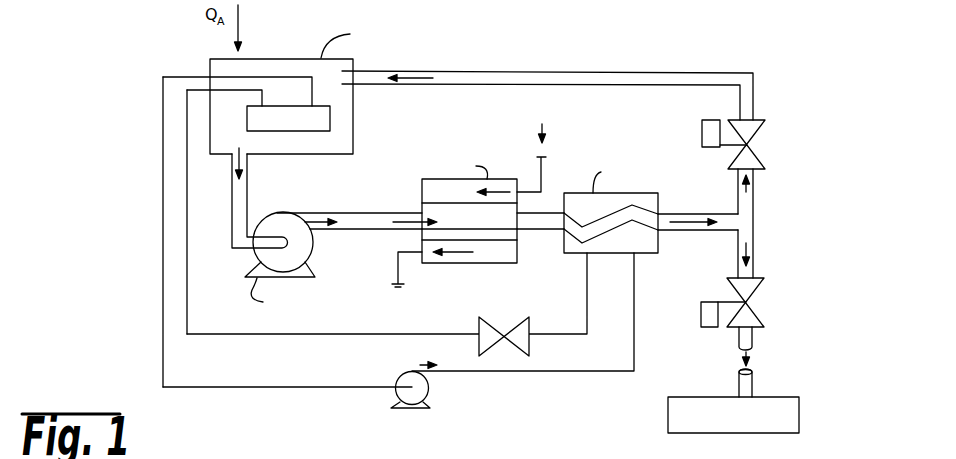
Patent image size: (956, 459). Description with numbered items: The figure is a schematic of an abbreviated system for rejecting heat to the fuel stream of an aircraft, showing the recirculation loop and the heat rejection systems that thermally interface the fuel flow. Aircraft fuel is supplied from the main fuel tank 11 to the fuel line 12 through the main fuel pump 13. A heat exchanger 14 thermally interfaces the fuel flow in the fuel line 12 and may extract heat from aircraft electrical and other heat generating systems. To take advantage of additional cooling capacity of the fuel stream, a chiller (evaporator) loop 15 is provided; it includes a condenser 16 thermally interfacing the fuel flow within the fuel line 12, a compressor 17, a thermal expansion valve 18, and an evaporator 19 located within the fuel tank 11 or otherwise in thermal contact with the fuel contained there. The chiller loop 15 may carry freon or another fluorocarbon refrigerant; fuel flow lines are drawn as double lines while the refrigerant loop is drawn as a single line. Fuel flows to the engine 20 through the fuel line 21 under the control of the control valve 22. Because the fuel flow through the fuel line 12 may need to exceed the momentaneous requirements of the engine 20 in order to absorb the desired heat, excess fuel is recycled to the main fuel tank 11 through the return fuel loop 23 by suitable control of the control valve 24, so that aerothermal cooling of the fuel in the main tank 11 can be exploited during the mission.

The main fuel tank 11 is at (285, 58).
The fuel line 12 is at (317, 213).
The main fuel pump 13 is at (280, 269).
The heat exchanger 14 is at (457, 263).
The chiller (evaporator) loop 15 is at (479, 371).
The condenser 16 is at (571, 255).
The compressor 17 is at (398, 382).
The thermal expansion valve 18 is at (514, 320).
The evaporator 19 is at (247, 118).
The engine 20 is at (668, 423).
The fuel line 21 is at (754, 336).
The control valve 22 is at (760, 292).
The return fuel loop 23 is at (655, 71).
The control valve 24 is at (756, 152).